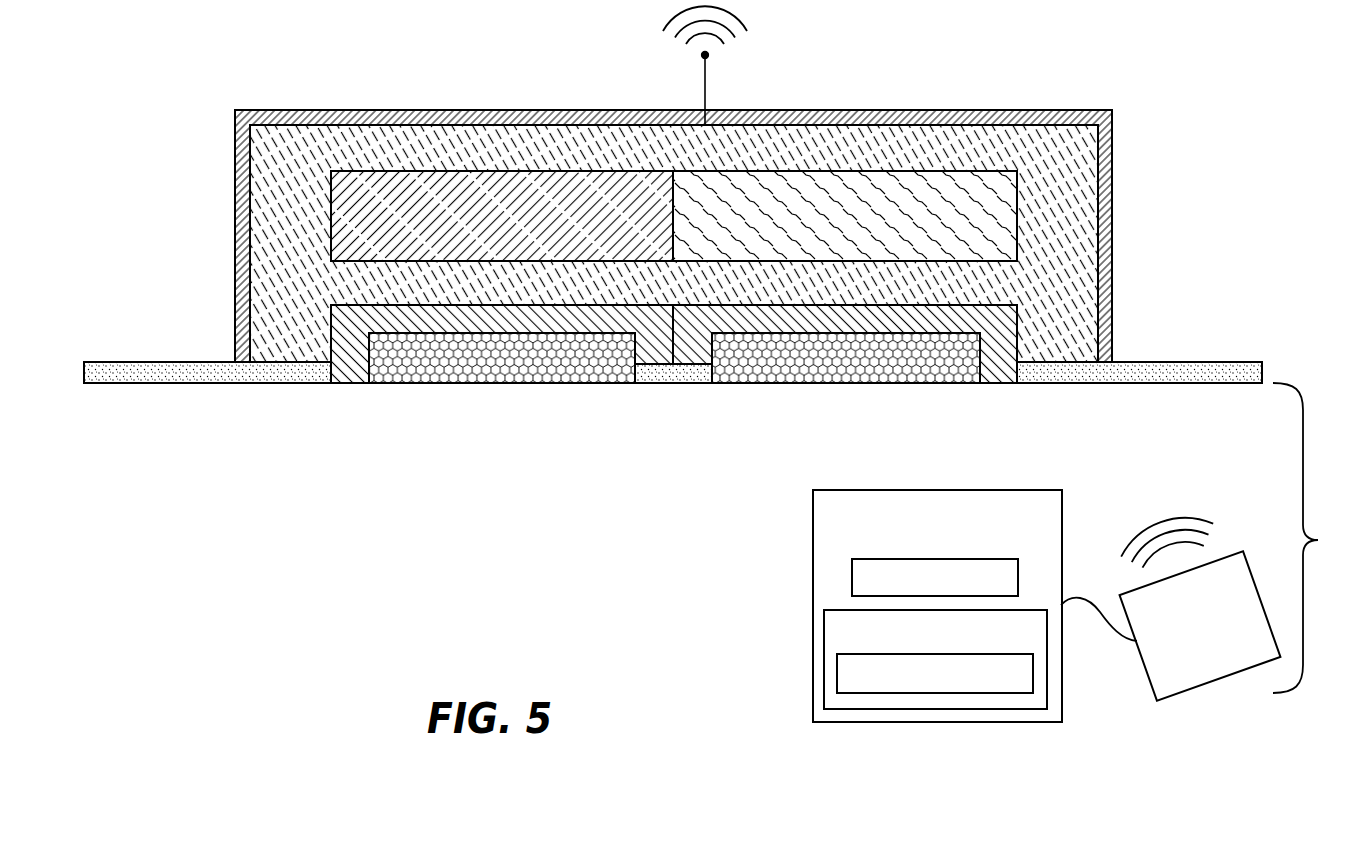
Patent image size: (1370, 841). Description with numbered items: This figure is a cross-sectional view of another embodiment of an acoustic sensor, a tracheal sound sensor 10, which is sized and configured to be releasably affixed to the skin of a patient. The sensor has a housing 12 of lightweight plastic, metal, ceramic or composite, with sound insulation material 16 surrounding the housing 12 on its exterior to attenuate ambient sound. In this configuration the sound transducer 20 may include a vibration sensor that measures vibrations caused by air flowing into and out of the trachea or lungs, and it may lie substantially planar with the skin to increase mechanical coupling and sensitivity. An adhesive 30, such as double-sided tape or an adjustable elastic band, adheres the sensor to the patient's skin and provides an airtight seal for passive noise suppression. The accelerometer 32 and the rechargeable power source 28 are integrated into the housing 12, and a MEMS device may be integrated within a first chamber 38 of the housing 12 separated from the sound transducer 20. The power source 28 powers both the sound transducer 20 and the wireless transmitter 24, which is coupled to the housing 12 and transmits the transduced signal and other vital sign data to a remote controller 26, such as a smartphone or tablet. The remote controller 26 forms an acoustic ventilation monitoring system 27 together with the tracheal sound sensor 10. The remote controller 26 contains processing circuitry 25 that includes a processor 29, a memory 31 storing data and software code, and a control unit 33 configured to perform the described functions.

The tracheal sound sensor 10 is at (237, 101).
The housing 12 is at (397, 157).
The sound insulation material 16 is at (520, 112).
The sound transducer 20 is at (995, 374).
The wireless transmitter 24 is at (713, 93).
The processing circuitry 25 is at (945, 548).
The remote controller 26 is at (1170, 609).
The acoustic ventilation monitoring system 27 is at (1315, 538).
The rechargeable power source 28 is at (925, 218).
The processor 29 is at (1012, 643).
The adhesive 30 is at (152, 373).
The memory 31 is at (998, 588).
The accelerometer 32 is at (587, 217).
The control unit 33 is at (1018, 686).
The first chamber 38 is at (1018, 218).